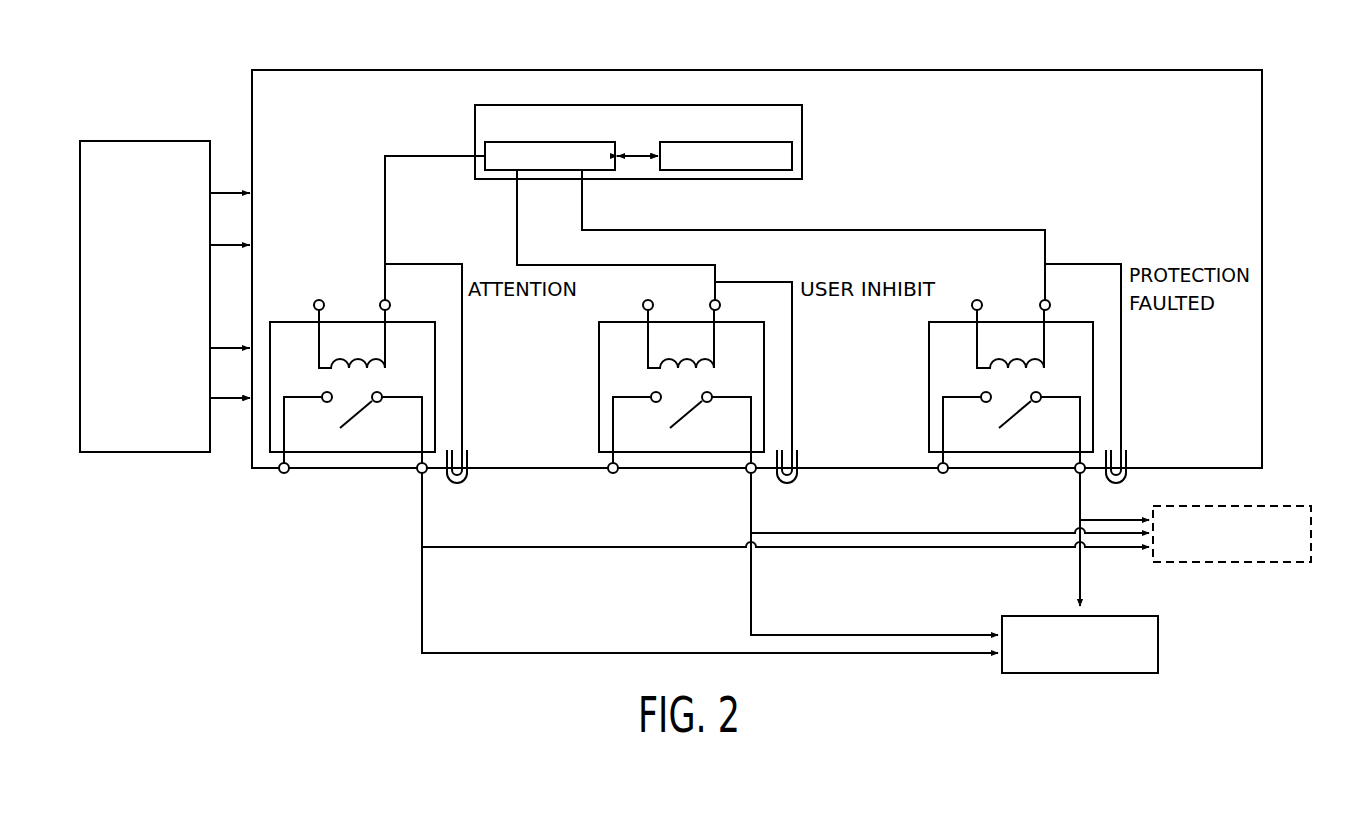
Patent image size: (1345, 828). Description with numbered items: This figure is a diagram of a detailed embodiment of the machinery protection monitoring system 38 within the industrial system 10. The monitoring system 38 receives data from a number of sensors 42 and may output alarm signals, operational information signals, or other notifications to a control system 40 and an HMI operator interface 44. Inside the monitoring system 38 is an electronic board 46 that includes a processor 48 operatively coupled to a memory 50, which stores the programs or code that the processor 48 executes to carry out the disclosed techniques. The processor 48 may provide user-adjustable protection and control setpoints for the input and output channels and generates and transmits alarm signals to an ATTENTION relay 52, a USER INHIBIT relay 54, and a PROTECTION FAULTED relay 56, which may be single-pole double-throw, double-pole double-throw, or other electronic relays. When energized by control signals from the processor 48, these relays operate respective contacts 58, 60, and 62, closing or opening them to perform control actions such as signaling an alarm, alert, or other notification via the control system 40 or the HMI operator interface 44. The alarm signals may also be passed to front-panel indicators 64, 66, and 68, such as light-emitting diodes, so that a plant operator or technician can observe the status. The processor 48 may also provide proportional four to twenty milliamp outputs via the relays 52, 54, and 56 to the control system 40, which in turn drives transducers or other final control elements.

The system 10 is at (1203, 38).
The machinery protection monitoring system 38 is at (1263, 265).
The control system 40 is at (1119, 616).
The sensors 42 is at (142, 141).
The HMI operator interface 44 is at (1233, 506).
The electronic board 46 is at (636, 180).
The processor 48 is at (484, 152).
The memory 50 is at (792, 157).
The ATTENTION relay 52 is at (340, 298).
The USER INHIBIT relay 54 is at (668, 298).
The PROTECTION FAULTED relay 56 is at (1000, 282).
The contact 58 is at (362, 428).
The contact 60 is at (690, 428).
The contact 62 is at (1020, 428).
The front-panel indicator 64 is at (468, 460).
The front-panel indicator 66 is at (798, 460).
The front-panel indicator 68 is at (1127, 462).